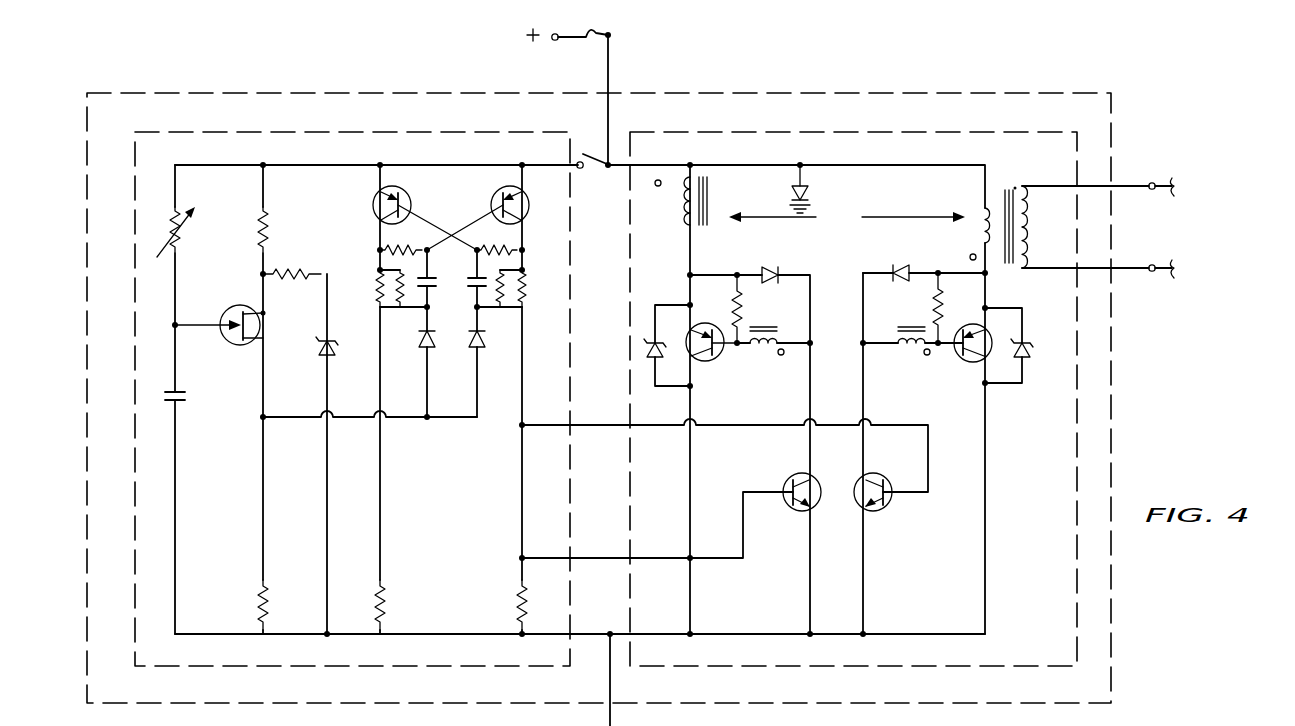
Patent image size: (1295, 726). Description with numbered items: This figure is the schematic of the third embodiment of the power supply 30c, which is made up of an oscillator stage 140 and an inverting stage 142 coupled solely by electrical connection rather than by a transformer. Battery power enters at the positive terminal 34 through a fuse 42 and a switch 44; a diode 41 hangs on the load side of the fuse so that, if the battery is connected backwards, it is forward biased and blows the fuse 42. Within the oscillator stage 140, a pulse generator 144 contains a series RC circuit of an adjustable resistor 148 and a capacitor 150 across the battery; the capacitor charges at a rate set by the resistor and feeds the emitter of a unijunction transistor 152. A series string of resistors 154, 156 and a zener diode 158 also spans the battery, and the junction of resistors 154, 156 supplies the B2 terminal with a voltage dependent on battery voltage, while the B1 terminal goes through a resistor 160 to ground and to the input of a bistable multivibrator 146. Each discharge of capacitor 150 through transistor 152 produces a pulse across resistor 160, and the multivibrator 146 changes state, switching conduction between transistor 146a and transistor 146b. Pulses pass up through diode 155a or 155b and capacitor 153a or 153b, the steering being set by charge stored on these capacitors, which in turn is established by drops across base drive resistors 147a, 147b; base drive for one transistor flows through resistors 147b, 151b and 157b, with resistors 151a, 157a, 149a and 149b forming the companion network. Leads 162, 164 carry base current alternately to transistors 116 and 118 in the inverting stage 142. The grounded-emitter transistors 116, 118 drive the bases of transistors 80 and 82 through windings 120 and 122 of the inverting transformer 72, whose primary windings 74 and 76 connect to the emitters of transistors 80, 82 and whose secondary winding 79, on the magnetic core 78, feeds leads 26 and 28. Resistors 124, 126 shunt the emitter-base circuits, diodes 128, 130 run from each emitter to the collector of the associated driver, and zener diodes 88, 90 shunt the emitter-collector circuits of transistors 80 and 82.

The power supply 30c is at (272, 90).
The positive supply terminal 34 is at (552, 42).
The fuse 42 is at (585, 46).
The switch 44 is at (598, 148).
The lead 26 is at (1167, 185).
The lead 28 is at (1167, 268).
The diode 41 is at (812, 195).
The inverting transformer 72 is at (847, 219).
The primary winding 74 is at (678, 227).
The primary winding 76 is at (982, 237).
The magnetic core 78 is at (709, 194).
The secondary winding 79 is at (1036, 226).
The transistor 80 is at (708, 362).
The transistor 82 is at (962, 362).
The zener diode 88 is at (654, 362).
The zener diode 90 is at (1032, 370).
The transistor 116 is at (790, 510).
The transistor 118 is at (888, 510).
The winding 120 is at (748, 346).
The winding 122 is at (912, 348).
The resistor 124 is at (738, 301).
The resistor 126 is at (938, 305).
The diode 128 is at (772, 264).
The diode 130 is at (926, 259).
The oscillator stage 140 is at (542, 668).
The inverting stage 142 is at (1042, 668).
The pulse generator 144 is at (316, 226).
The bistable multivibrator 146 is at (450, 353).
The transistor 146a is at (410, 196).
The transistor 146b is at (524, 194).
The base drive resistor 147a is at (409, 241).
The base drive resistor 147b is at (491, 241).
The adjustable resistor 148 is at (182, 241).
The resistor 149a is at (396, 300).
The resistor 149b is at (516, 302).
The capacitor 150 is at (178, 392).
The resistor 151a is at (378, 298).
The resistor 151b is at (540, 298).
The unijunction transistor 152 is at (238, 308).
The capacitor 153a is at (434, 278).
The capacitor 153b is at (459, 298).
The resistor 154 is at (267, 234).
The diode 155a is at (424, 348).
The diode 155b is at (474, 348).
The resistor 156 is at (298, 272).
The resistor 157a is at (386, 604).
The resistor 157b is at (518, 606).
The zener diode 158 is at (324, 364).
The resistor 160 is at (266, 604).
The lead 162 is at (578, 562).
The lead 164 is at (545, 432).
The B1 terminal B1 is at (260, 338).
The B2 terminal B2 is at (266, 314).